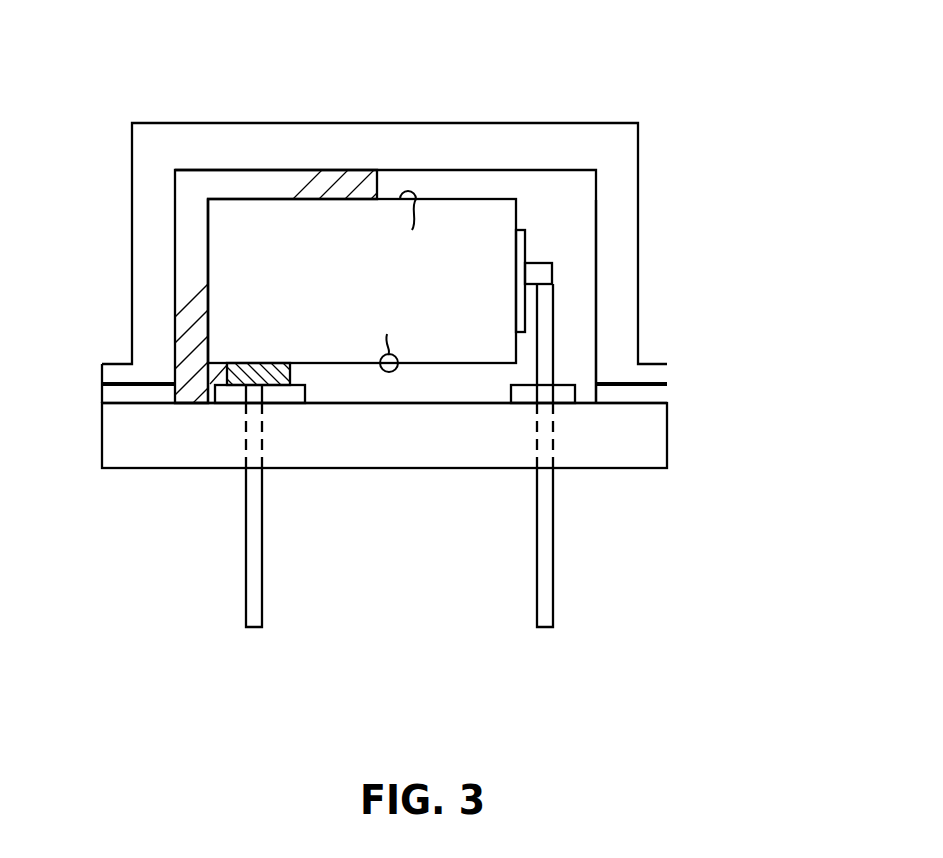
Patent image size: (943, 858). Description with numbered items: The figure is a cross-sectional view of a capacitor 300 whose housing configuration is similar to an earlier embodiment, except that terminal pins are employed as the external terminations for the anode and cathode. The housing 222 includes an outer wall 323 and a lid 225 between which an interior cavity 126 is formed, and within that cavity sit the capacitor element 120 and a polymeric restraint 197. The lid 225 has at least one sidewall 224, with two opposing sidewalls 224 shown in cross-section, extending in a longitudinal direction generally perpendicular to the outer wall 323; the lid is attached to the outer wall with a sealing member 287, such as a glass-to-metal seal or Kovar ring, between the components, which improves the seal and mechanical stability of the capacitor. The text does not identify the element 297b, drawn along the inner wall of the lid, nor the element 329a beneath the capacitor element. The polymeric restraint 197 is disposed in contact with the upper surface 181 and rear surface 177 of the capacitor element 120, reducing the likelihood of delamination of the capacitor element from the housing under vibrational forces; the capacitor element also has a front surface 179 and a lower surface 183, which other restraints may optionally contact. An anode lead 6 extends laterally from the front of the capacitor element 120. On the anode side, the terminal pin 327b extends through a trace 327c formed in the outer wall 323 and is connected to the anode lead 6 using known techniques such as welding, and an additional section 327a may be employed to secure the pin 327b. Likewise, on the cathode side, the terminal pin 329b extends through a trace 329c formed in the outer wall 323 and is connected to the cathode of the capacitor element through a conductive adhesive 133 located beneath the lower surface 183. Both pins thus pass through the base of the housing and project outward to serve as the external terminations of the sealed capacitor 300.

The capacitor 300 is at (730, 87).
The polymeric restraint 197 is at (299, 179).
The lid 225 is at (407, 143).
The interior cavity 126 is at (453, 187).
The sidewall 224 is at (155, 298).
The cover sidewall 297b is at (600, 243).
The sealing member 287 is at (110, 393).
The housing 222 is at (76, 358).
The rear surface 177 is at (208, 276).
The capacitor element 120 is at (379, 287).
The upper surface 181 is at (413, 226).
The front surface 179 is at (516, 232).
The anode lead 6 is at (540, 273).
The lower surface 183 is at (385, 338).
The conductive adhesive 133 is at (283, 373).
The left pad 329a is at (232, 398).
The trace 329c is at (255, 440).
The terminal pin 329b is at (253, 583).
The additional section 327a is at (520, 400).
The trace 327c is at (548, 440).
The terminal pin 327b is at (545, 548).
The outer wall 323 is at (371, 468).